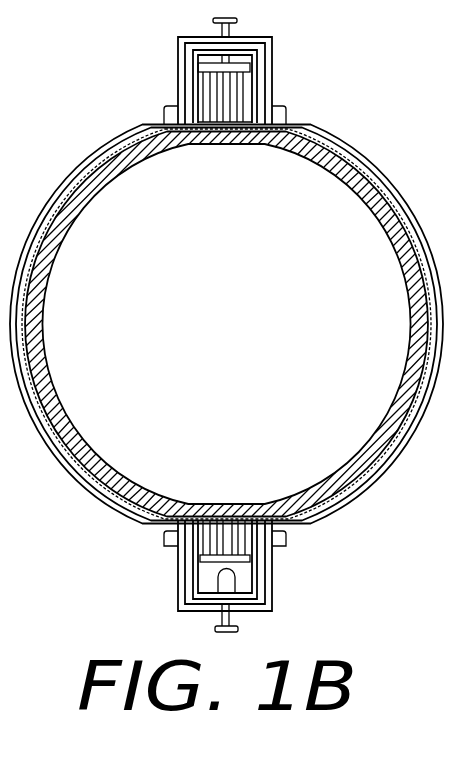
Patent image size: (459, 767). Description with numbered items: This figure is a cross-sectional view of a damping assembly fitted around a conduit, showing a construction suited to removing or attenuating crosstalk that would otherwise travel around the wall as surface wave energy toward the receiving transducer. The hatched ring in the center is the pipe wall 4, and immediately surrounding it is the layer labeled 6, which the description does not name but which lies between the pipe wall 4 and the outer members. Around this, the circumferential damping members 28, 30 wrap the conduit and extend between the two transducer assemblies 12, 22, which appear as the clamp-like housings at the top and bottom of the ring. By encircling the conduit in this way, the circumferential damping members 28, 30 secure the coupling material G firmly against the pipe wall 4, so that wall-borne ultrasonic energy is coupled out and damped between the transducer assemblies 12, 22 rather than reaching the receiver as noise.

The pipe wall 4 is at (392, 232).
The gasket 6 is at (387, 187).
The transducer assembly 12 is at (280, 80).
The transducer assembly 22 is at (283, 590).
The circumferential damping member 28 is at (303, 124).
The circumferential damping member 30 is at (113, 143).